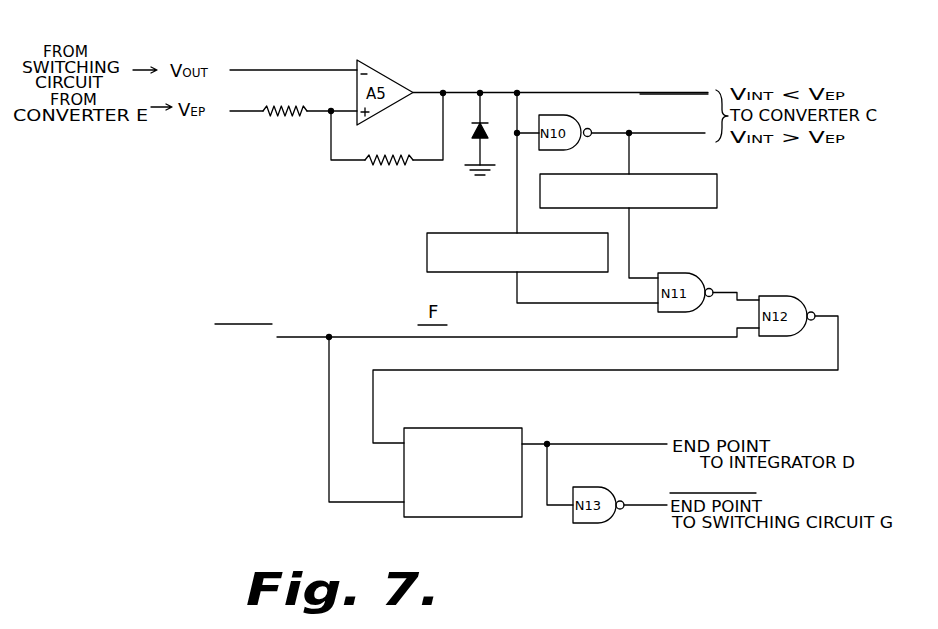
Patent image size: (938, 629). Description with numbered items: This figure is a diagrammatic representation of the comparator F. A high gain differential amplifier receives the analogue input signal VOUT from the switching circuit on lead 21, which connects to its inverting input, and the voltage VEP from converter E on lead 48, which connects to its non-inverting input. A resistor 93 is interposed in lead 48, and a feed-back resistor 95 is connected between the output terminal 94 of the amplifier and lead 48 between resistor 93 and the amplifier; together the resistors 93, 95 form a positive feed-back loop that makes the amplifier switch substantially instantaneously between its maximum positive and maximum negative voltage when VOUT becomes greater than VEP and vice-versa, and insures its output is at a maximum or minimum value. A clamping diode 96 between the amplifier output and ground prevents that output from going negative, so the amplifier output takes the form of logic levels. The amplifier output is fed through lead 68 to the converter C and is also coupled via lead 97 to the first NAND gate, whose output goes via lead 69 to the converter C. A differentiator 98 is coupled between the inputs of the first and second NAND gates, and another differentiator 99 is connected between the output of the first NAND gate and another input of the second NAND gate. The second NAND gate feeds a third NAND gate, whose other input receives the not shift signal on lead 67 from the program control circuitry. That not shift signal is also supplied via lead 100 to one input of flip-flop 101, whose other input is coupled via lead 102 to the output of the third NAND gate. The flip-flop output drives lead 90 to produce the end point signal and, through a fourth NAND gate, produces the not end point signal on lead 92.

The lead 21 is at (255, 70).
The lead 48 is at (240, 112).
The resistor 93 is at (290, 118).
The output terminal 94 is at (426, 92).
The feed-back resistor 95 is at (376, 165).
The clamping diode 96 is at (476, 132).
The lead 97 is at (519, 110).
The lead 68 is at (668, 94).
The lead 69 is at (658, 133).
The differentiator 99 is at (717, 192).
The differentiator 98 is at (427, 258).
The lead 67 is at (305, 337).
The lead 102 is at (584, 371).
The lead 100 is at (329, 430).
The flip-flop 101 is at (456, 517).
The lead 90 is at (610, 444).
The lead 92 is at (648, 505).